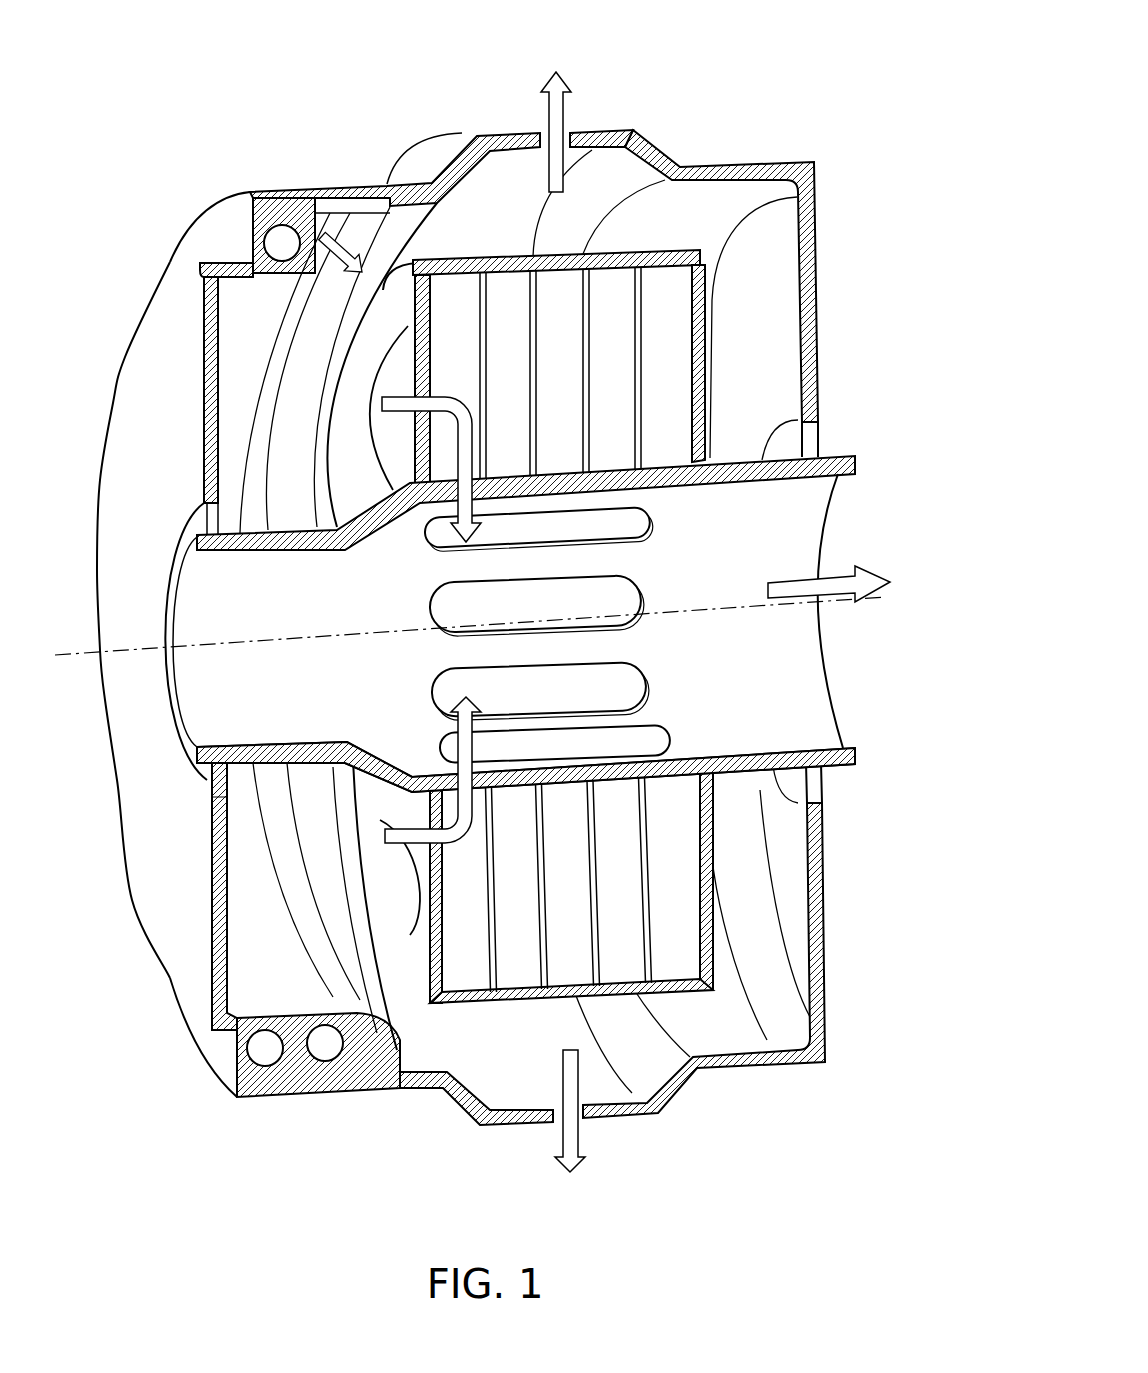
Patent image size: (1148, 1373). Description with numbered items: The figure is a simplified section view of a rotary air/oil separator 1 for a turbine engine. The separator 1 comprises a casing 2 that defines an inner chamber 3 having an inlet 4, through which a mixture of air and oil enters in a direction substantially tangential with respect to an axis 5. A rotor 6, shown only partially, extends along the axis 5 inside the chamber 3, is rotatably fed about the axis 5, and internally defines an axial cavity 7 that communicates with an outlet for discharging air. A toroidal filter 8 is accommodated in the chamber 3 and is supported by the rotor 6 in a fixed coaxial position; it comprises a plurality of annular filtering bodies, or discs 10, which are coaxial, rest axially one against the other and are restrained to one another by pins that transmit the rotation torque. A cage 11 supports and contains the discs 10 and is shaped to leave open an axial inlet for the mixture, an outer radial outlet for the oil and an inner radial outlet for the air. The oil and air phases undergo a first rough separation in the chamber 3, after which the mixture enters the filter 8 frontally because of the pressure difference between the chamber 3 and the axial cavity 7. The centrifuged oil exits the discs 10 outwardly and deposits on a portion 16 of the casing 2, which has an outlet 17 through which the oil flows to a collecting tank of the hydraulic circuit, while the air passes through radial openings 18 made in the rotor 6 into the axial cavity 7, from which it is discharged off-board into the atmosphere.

The rotary air/oil separator 1 is at (750, 56).
The casing 2 is at (800, 162).
The inner chamber 3 is at (412, 217).
The inlet 4 is at (330, 188).
The axis 5 is at (855, 607).
The rotor 6 is at (856, 458).
The axial cavity 7 is at (805, 506).
The filter 8 is at (715, 356).
The annular filtering bodies (discs) 10 is at (458, 292).
The cage 11 is at (688, 251).
The portion of the casing 16 is at (625, 130).
The outlet 17 is at (541, 131).
The radial openings 18 is at (640, 530).